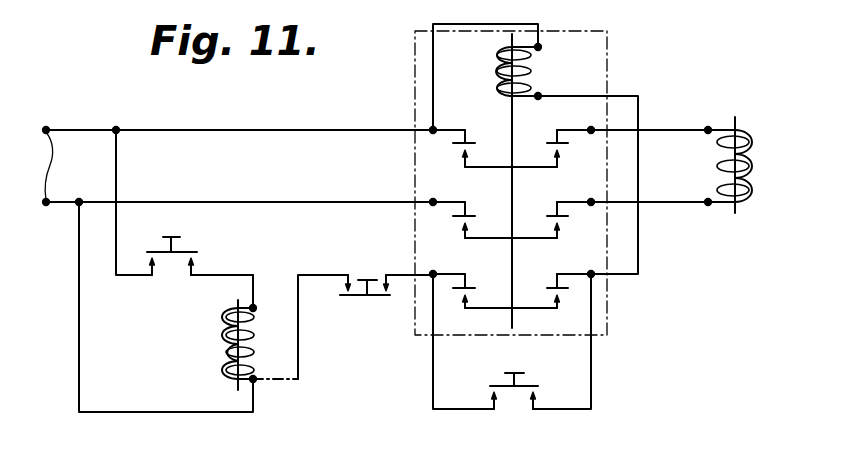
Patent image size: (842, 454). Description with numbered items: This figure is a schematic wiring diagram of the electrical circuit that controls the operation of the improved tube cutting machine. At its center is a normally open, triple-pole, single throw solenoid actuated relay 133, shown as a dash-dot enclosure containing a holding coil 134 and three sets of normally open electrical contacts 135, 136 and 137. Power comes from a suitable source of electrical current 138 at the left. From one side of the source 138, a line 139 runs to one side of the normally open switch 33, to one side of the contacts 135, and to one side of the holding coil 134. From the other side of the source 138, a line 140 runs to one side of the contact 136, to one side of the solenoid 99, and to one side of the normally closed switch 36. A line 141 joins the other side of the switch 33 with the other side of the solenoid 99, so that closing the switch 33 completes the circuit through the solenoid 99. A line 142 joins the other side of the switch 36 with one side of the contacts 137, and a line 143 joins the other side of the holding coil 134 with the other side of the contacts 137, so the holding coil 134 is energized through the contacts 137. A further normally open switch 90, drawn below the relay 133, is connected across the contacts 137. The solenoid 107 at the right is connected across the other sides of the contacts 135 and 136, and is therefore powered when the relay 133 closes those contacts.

The normally open switch 33 is at (173, 247).
The normally closed switch 36 is at (358, 296).
The transistor 90 is at (528, 386).
The solenoid 99 is at (222, 336).
The solenoid 107 is at (752, 166).
The solenoid actuated relay 133 is at (610, 60).
The holding coil 134 is at (497, 77).
The electrical contacts 135 is at (549, 141).
The electrical contacts 136 is at (551, 214).
The electrical contacts 137 is at (551, 286).
The source of electrical current 138 is at (64, 166).
The line 139 is at (81, 130).
The line 140 is at (79, 206).
The line 141 is at (231, 275).
The line 142 is at (407, 273).
The line 143 is at (638, 246).